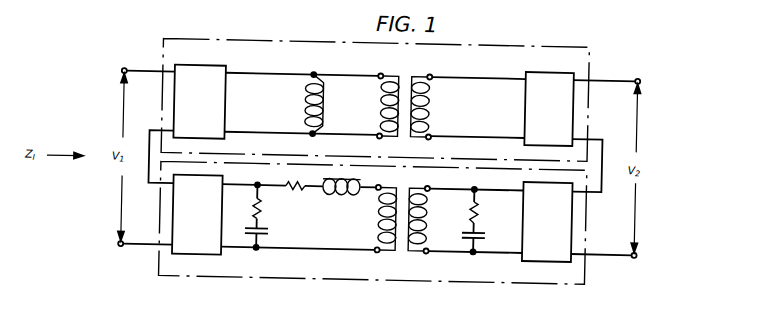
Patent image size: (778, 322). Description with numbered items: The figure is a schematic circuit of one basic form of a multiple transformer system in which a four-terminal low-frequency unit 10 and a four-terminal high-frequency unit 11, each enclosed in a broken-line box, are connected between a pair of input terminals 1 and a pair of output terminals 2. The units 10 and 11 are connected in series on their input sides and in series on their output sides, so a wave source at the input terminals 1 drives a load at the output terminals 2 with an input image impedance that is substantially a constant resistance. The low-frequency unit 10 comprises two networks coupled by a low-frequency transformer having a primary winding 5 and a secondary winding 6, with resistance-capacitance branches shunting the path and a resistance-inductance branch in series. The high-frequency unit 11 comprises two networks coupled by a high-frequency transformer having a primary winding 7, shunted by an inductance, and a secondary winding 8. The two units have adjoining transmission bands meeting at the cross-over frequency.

The four-terminal low-frequency unit 10 is at (372, 235).
The four-terminal high-frequency unit 11 is at (375, 86).
The input terminal 1 is at (138, 155).
The output terminal 2 is at (616, 168).
The primary winding terminal of low-frequency transformer 5 is at (380, 220).
The secondary winding terminal of low-frequency transformer 6 is at (424, 220).
The primary winding terminal of high-frequency transformer 7 is at (380, 105).
The secondary winding terminal of high-frequency transformer 8 is at (427, 105).